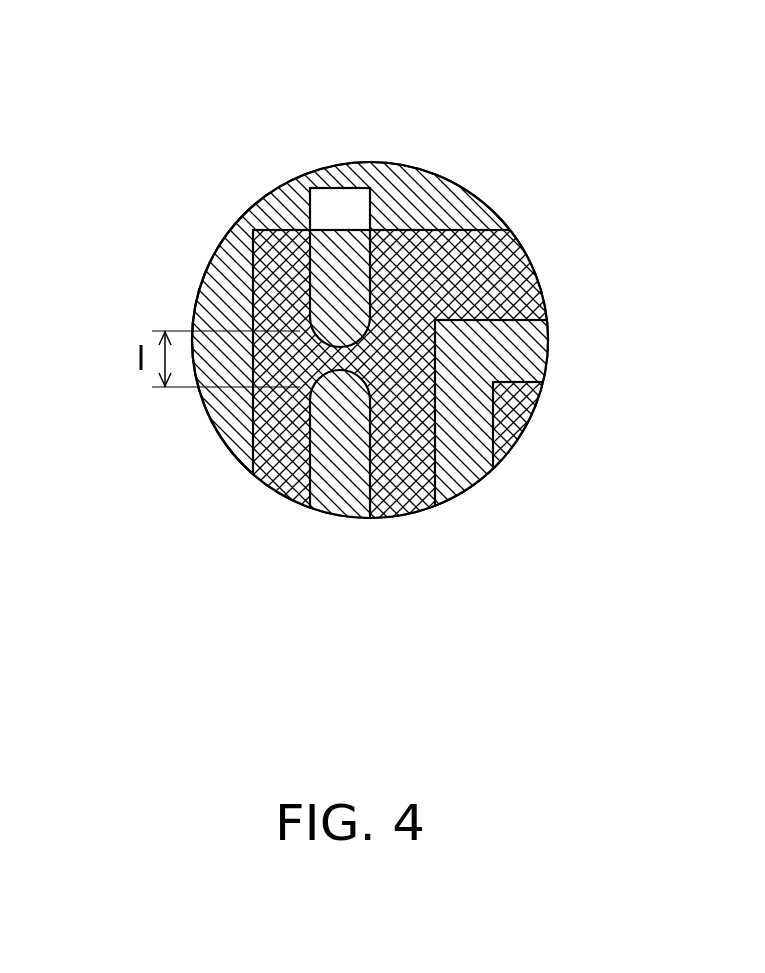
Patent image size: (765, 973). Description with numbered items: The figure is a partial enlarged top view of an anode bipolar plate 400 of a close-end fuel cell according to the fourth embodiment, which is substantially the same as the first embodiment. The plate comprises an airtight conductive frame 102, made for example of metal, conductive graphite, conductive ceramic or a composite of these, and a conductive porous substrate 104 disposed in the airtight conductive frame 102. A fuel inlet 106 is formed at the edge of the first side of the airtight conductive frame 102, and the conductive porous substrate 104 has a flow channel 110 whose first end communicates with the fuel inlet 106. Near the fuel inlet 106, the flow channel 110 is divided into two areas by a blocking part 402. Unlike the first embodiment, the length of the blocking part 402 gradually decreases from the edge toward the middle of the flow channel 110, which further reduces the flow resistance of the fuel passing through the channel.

The anode bipolar plate 400 is at (193, 98).
The airtight conductive frame 102 is at (435, 205).
The conductive porous substrate 104 is at (263, 285).
The fuel inlet 106 is at (337, 200).
The flow channel 110 is at (547, 357).
The blocking part 402 is at (340, 362).